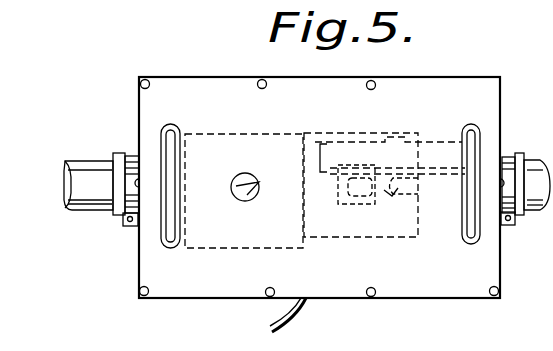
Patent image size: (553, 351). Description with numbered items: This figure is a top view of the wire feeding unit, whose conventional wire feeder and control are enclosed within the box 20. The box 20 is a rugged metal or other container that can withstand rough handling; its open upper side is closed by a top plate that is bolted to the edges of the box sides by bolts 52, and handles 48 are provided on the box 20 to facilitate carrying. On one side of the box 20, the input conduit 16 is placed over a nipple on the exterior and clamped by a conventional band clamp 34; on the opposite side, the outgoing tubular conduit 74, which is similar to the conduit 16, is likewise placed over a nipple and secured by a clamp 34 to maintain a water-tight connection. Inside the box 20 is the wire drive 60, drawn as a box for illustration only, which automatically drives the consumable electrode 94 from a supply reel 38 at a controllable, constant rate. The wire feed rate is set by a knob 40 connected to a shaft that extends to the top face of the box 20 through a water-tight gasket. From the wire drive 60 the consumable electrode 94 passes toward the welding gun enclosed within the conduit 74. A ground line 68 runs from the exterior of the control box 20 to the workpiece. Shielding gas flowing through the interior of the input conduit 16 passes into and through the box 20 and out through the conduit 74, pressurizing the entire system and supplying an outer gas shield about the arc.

The box 20 is at (424, 289).
The conduit 16 is at (533, 170).
The tubular conduit 74 is at (86, 178).
The band clamp 34 is at (126, 228).
The handles 48 is at (175, 130).
The wire drive 60 is at (217, 250).
The knob 40 is at (247, 198).
The supply reel 38 is at (340, 135).
The consumable electrode 94 is at (312, 178).
The ground line 68 is at (272, 324).
The bolts 52 is at (368, 295).